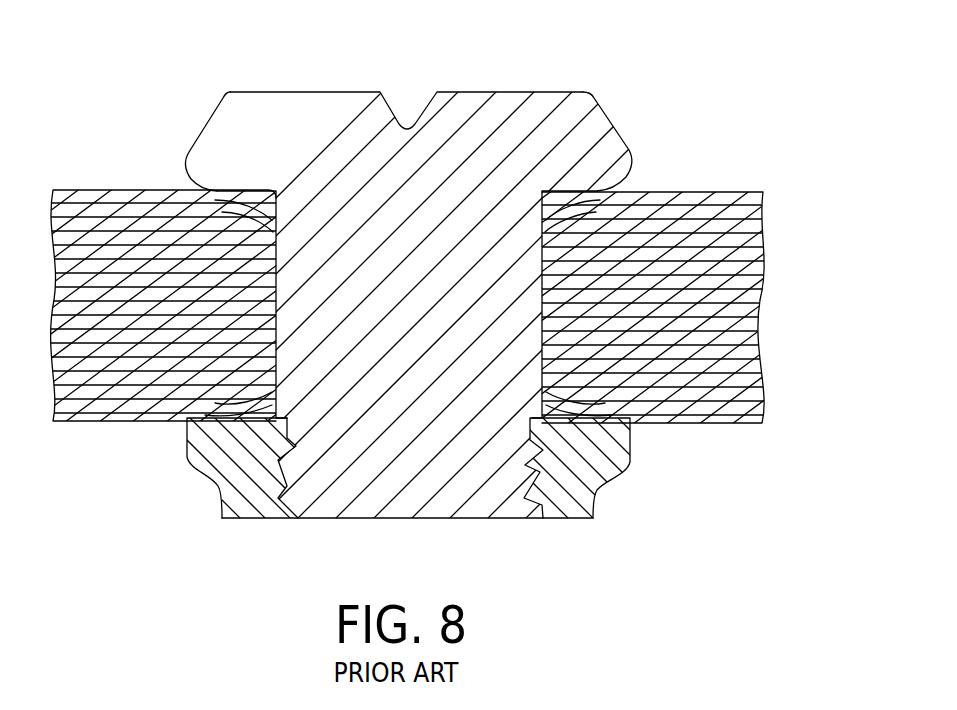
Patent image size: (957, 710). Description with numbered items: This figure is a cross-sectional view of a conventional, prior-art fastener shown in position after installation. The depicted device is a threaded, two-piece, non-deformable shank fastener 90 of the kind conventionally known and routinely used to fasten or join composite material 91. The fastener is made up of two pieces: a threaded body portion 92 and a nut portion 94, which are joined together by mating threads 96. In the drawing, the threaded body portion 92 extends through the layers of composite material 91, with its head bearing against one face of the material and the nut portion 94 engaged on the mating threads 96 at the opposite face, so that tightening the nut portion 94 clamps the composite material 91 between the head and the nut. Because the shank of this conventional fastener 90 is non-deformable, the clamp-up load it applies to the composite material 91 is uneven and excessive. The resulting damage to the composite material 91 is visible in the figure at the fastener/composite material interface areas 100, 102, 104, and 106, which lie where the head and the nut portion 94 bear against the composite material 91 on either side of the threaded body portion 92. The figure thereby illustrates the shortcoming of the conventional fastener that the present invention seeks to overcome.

The non-deformable shank fastener 90 is at (468, 73).
The composite material 91 is at (107, 193).
The threaded body portion 92 is at (415, 493).
The nut portion 94 is at (628, 463).
The mating threads 96 is at (298, 518).
The fastener/composite material interface area 100 is at (257, 203).
The fastener/composite material interface area 102 is at (555, 205).
The fastener/composite material interface area 104 is at (257, 412).
The fastener/composite material interface area 106 is at (555, 416).